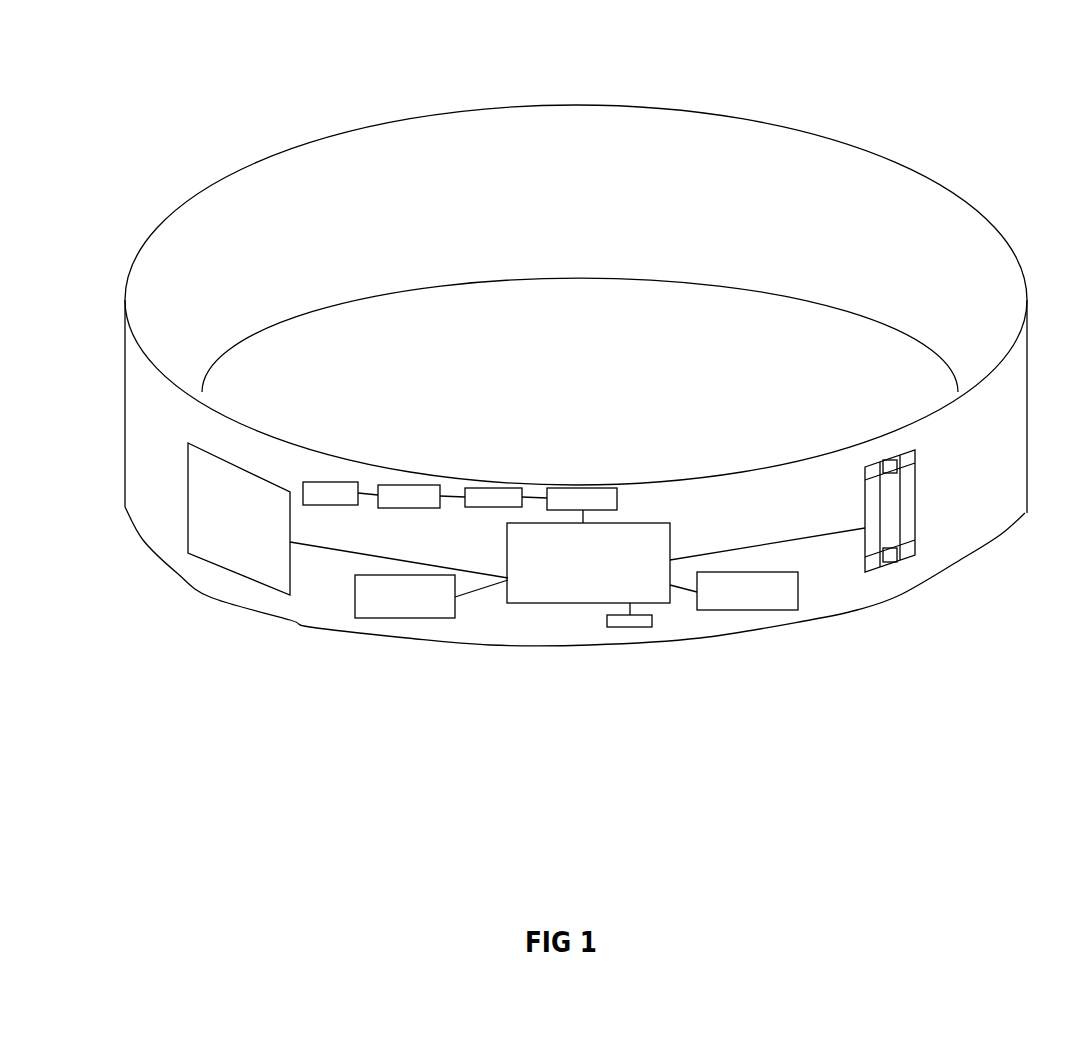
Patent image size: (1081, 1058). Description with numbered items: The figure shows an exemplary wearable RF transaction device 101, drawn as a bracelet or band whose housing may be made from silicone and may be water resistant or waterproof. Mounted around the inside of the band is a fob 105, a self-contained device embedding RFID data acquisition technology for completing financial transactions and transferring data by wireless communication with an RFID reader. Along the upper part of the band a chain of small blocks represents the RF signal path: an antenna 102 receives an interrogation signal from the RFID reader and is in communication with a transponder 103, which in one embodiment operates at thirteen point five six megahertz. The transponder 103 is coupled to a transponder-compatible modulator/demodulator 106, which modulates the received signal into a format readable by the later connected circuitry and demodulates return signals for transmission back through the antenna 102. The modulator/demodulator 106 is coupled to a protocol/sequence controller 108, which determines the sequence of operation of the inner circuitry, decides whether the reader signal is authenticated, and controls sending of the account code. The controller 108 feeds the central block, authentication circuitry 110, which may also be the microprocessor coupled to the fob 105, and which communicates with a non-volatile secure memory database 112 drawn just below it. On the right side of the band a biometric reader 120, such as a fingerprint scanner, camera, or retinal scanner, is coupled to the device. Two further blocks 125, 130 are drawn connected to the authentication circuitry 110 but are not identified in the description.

The RF transaction device 101 is at (927, 173).
The antenna 102 is at (332, 482).
The transponder 103 is at (410, 485).
The fob 105 is at (220, 572).
The modulator/demodulator 106 is at (492, 488).
The protocol/sequence controller 108 is at (597, 488).
The authentication circuitry 110 is at (587, 603).
The secure memory database 112 is at (630, 627).
The biometric reader 120 is at (892, 562).
The communication module 125 is at (406, 618).
The power source 130 is at (746, 610).